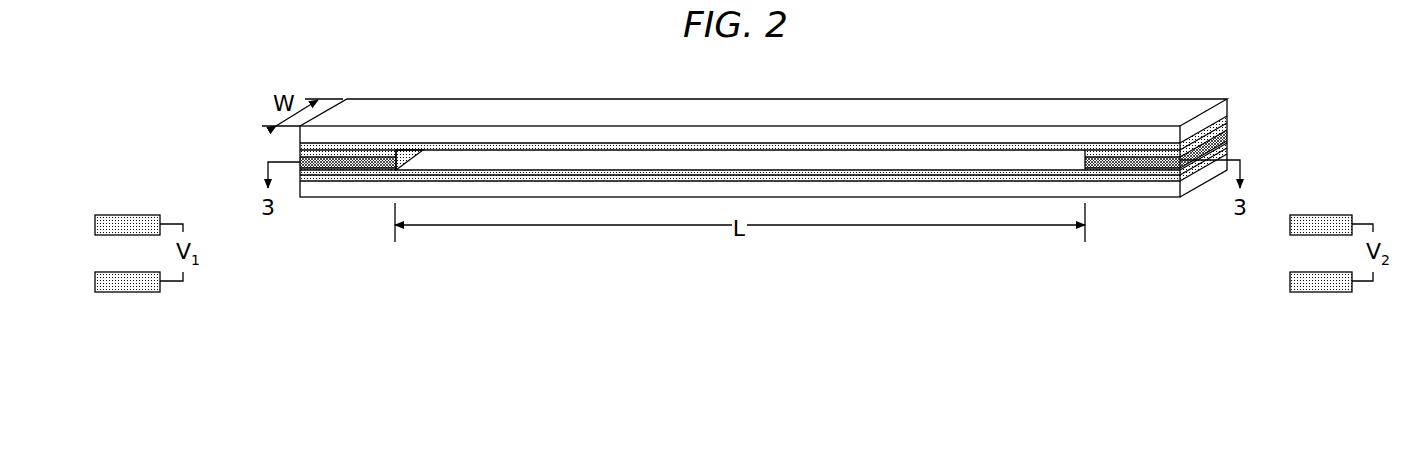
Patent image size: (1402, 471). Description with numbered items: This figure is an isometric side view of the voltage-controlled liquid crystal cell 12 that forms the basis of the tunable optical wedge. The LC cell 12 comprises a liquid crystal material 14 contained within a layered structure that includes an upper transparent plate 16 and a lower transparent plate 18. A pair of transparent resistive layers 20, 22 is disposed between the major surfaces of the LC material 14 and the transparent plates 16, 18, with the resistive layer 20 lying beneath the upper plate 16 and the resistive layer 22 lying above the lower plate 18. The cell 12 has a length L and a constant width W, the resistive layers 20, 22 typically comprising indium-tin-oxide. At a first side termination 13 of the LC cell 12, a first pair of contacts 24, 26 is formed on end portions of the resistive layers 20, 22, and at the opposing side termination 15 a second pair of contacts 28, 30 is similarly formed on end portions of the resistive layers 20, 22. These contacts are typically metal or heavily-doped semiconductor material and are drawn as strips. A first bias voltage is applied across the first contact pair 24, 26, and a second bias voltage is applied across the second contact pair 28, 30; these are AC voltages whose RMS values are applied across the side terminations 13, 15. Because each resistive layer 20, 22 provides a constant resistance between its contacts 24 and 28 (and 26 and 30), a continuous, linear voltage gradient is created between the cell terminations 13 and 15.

The voltage-controlled liquid crystal cell 12 is at (518, 250).
The first side termination 13 is at (280, 148).
The liquid crystal material 14 is at (962, 160).
The opposing side termination 15 is at (1233, 133).
The upper transparent plate 16 is at (905, 131).
The lower transparent plate 18 is at (1172, 186).
The upper resistive layer 20 is at (1022, 150).
The lower resistive layer 22 is at (1101, 180).
The first contact 24 is at (381, 151).
The first-pair lower contact 26 is at (353, 171).
The second-pair upper contact 28 is at (1148, 151).
The second-pair lower contact 30 is at (1141, 176).